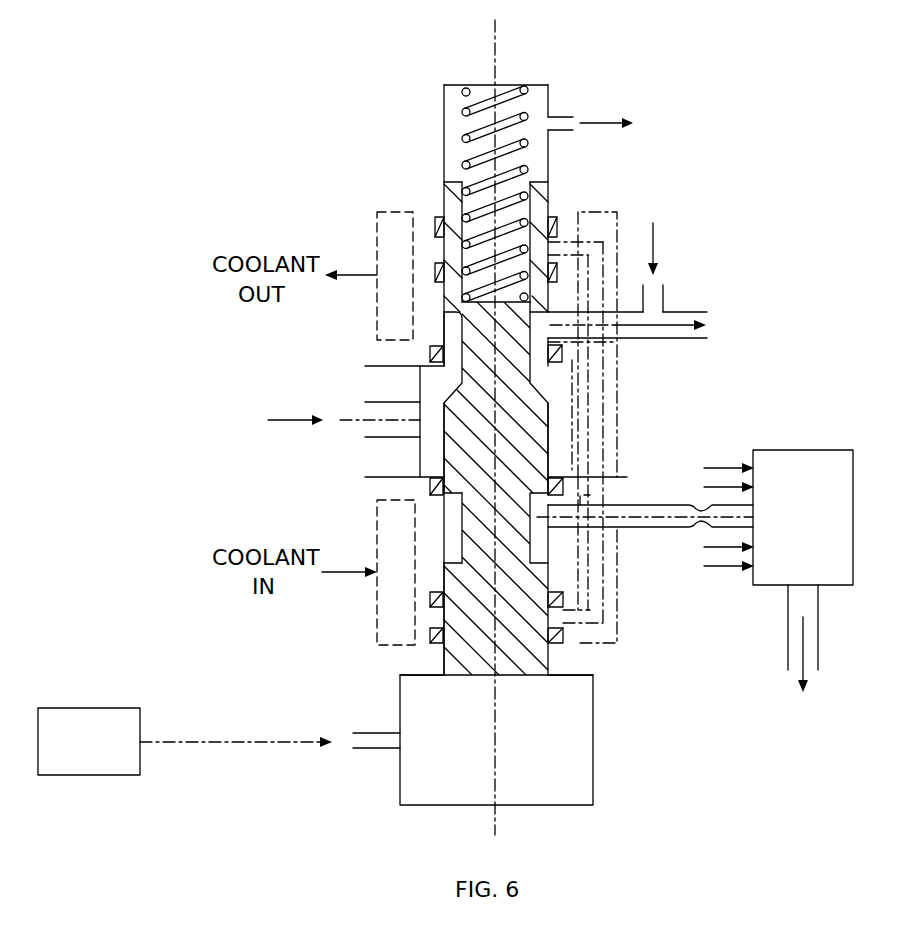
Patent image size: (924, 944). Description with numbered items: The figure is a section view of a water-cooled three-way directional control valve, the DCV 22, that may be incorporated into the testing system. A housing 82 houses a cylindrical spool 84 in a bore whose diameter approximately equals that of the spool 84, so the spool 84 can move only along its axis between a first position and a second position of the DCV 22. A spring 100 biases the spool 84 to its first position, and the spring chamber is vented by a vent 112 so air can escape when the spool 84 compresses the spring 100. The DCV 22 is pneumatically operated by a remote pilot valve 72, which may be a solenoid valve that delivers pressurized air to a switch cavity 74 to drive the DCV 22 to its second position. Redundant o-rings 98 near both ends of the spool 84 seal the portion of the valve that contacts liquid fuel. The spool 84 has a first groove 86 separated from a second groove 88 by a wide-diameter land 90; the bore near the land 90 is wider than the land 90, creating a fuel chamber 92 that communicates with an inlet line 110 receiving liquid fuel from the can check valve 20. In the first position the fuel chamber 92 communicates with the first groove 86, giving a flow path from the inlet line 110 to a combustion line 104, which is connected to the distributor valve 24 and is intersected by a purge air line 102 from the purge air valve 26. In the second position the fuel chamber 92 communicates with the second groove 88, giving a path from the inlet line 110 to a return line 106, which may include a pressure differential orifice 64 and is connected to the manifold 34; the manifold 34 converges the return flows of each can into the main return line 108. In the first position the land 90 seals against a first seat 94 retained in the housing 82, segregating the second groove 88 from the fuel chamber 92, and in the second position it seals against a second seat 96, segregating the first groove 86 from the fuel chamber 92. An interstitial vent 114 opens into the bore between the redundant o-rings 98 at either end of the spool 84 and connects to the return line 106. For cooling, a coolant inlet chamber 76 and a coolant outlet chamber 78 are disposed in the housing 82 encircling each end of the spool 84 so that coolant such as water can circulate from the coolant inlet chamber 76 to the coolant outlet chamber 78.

The directional control valve 22 is at (396, 76).
The spring 100 is at (524, 112).
The vent 112 is at (563, 116).
The o-rings 98 is at (434, 274).
The second seat 96 is at (430, 354).
The first seat 94 is at (430, 487).
The first groove 86 is at (420, 366).
The inlet line 110 is at (393, 438).
The can check valve 20 is at (235, 422).
The fuel chamber 92 is at (428, 452).
The second groove 88 is at (445, 532).
The land 90 is at (548, 432).
The coolant outlet chamber 78 is at (617, 235).
The interstitial vent 114 is at (605, 398).
The purge air valve 26 is at (652, 217).
The purge air line 102 is at (663, 298).
The combustion line 104 is at (677, 340).
The distributor valve 24 is at (669, 329).
The return line 106 is at (657, 505).
The pressure differential orifice 64 is at (693, 545).
The coolant inlet chamber 76 is at (617, 545).
The manifold 34 is at (818, 525).
The main return line 108 is at (818, 628).
The switch cavity 74 is at (541, 745).
The housing 82 is at (398, 660).
The spool 84 is at (548, 662).
The remote pilot valve 72 is at (103, 755).